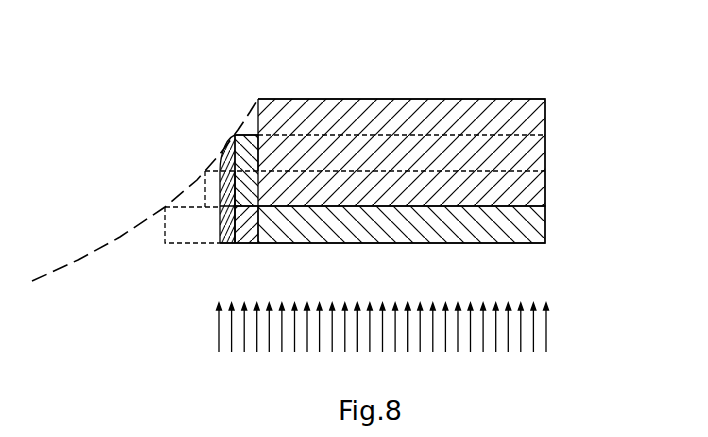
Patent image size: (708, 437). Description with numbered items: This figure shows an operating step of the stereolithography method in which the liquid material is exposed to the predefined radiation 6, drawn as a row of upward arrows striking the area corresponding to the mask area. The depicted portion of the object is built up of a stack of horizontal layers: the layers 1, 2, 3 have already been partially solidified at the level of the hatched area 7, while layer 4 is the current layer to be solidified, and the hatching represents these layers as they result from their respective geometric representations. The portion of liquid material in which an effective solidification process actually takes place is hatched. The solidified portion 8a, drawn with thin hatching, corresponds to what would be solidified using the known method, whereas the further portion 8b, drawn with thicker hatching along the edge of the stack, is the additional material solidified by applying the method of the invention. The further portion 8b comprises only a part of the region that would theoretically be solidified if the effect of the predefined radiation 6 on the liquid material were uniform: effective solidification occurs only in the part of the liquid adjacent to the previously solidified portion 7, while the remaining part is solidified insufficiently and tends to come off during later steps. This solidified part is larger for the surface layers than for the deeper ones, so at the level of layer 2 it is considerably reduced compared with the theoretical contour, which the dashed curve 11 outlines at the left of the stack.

The layer 1 is at (560, 117).
The layer 2 is at (560, 152).
The layer 3 is at (560, 187).
The layer 4 is at (560, 223).
The predefined radiation 6 is at (547, 330).
The hatched area 7 is at (470, 118).
The solidified portion 8a is at (282, 228).
The further portion 8b is at (223, 227).
The surface contour line 11 is at (78, 259).